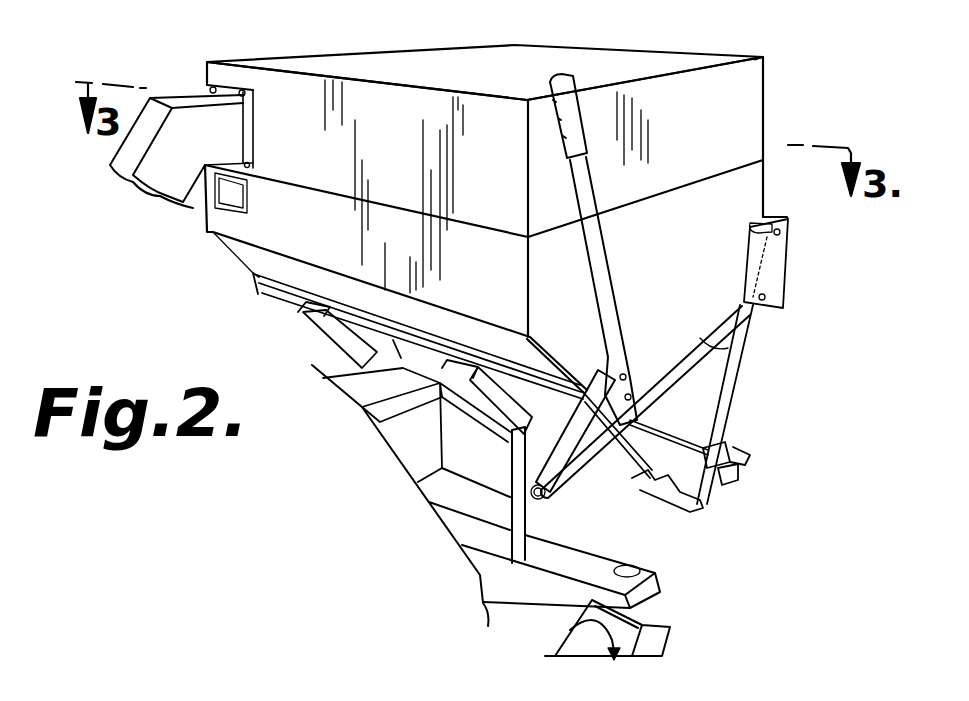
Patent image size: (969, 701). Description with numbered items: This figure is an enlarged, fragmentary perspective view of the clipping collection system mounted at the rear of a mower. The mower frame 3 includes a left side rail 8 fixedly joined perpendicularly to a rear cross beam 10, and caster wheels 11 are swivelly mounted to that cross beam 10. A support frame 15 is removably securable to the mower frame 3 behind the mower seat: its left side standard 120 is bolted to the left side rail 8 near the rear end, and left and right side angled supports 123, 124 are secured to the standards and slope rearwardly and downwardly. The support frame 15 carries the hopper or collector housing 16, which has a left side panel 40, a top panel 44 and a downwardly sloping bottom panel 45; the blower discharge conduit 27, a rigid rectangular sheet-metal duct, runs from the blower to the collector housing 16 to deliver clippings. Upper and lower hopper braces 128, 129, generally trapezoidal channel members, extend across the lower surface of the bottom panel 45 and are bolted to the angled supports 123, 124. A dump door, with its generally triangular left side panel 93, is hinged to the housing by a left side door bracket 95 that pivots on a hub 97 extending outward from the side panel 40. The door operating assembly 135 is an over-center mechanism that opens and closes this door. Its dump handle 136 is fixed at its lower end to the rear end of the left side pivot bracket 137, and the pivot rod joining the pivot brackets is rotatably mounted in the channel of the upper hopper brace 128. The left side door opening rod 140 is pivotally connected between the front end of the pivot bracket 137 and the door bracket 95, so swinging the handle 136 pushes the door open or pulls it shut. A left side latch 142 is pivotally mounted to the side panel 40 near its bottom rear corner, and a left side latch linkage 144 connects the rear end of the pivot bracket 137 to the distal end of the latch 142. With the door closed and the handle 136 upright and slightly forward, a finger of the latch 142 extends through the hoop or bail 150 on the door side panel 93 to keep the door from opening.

The mower frame 3 is at (662, 601).
The left side rail 8 is at (501, 605).
The rear cross beam 10 is at (612, 522).
The caster wheels 11 is at (574, 638).
The support frame 15 is at (205, 300).
The collector housing 16 is at (766, 58).
The blower discharge conduit 27 is at (108, 158).
The left side panel 40 is at (676, 266).
The top panel 44 is at (488, 82).
The bottom panel 45 is at (228, 258).
The left side panel of door 93 is at (740, 412).
The left side door bracket 95 is at (788, 273).
The hub 97 is at (748, 230).
The left side standard 120 is at (508, 453).
The left side angled support 123 is at (518, 360).
The right side angled support 124 is at (309, 308).
The upper hopper brace 128 is at (417, 404).
The lower hopper brace 129 is at (653, 490).
The door operating assembly 135 is at (550, 170).
The dump handle 136 is at (588, 162).
The left side pivot bracket 137 is at (594, 372).
The left side door opening rod 140 is at (730, 350).
The left side latch 142 is at (727, 483).
The left side latch linkage 144 is at (682, 440).
The left side hoop 150 is at (752, 460).